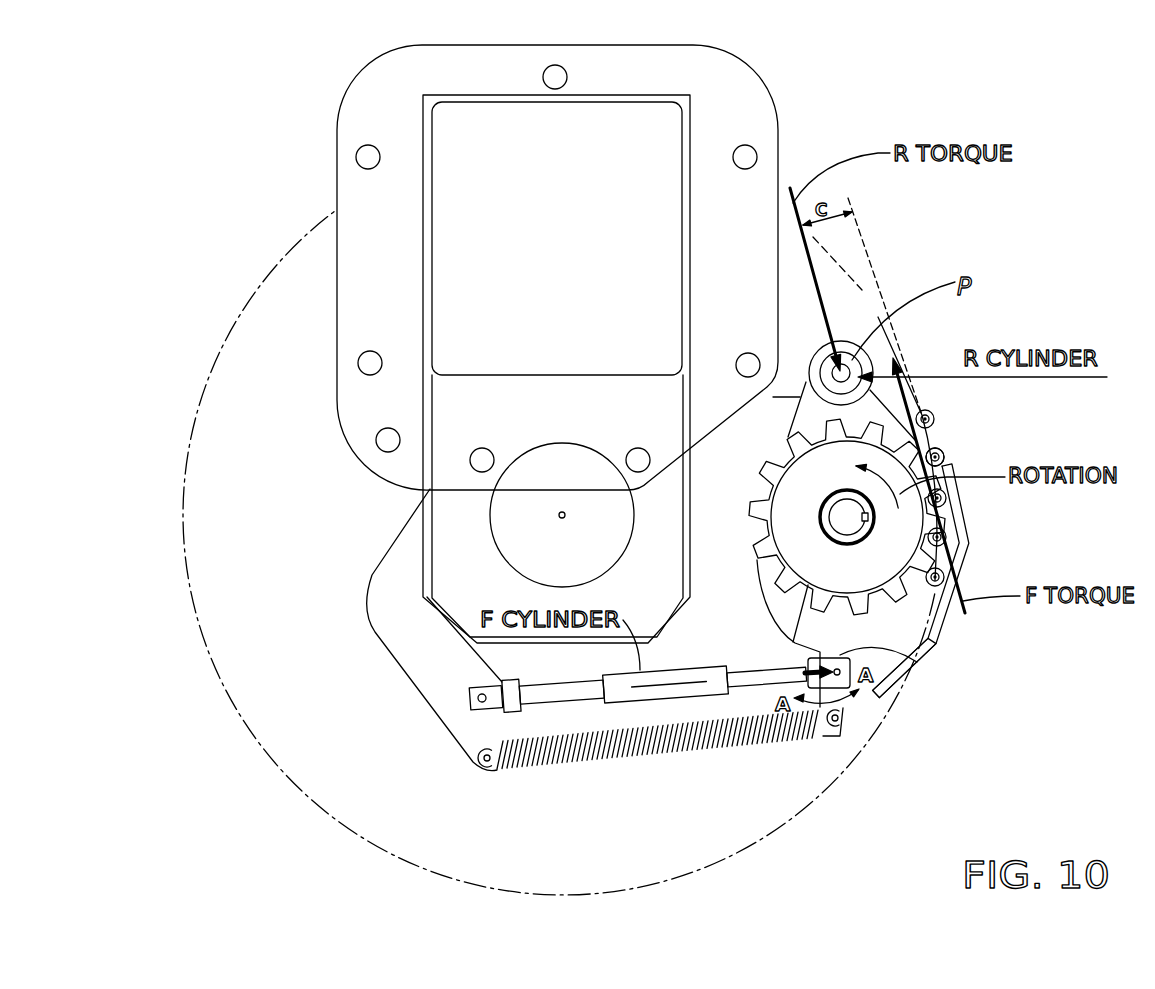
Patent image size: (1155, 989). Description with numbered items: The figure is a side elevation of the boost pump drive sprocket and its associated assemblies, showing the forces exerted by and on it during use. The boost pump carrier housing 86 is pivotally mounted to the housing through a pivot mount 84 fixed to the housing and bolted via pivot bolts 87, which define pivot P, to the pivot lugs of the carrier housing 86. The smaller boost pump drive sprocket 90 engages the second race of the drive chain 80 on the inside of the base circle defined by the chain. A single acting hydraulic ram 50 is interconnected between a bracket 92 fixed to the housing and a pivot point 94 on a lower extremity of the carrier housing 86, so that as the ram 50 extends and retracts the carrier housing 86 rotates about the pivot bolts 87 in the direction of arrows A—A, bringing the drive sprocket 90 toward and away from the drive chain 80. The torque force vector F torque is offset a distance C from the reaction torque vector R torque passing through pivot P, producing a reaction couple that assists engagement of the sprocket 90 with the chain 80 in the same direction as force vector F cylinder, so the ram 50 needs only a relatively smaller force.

The hydraulic ram 50 is at (617, 738).
The drive chain 80 is at (940, 597).
The pivot mount 84 is at (805, 373).
The boost pump carrier housing 86 is at (969, 533).
The pivot bolts 87 is at (860, 370).
The boost pump drive sprocket 90 is at (944, 458).
The bracket 92 is at (402, 623).
The pivot point 94 is at (907, 657).